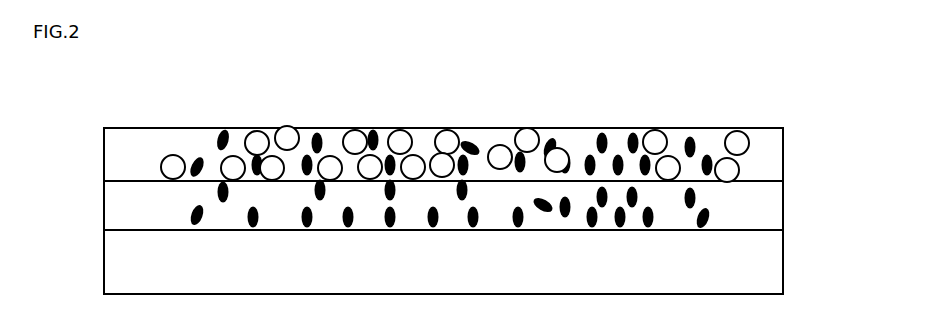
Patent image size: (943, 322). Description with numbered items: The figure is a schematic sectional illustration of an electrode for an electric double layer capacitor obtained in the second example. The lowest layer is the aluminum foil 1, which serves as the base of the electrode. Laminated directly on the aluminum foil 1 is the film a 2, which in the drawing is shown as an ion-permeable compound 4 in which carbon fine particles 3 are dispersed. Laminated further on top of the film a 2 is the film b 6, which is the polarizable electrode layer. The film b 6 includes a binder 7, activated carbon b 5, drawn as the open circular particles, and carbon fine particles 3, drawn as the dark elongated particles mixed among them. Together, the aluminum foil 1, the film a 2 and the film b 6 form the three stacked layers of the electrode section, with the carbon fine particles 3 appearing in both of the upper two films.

The aluminum foil 1 is at (443, 262).
The film a 2 is at (443, 205).
The carbon fine particle 3 is at (224, 130).
The ion-permeable compound 4 is at (768, 208).
The activated carbon b 5 is at (527, 137).
The film b (polarizable electrode layer) 6 is at (443, 154).
The binder 7 is at (768, 153).